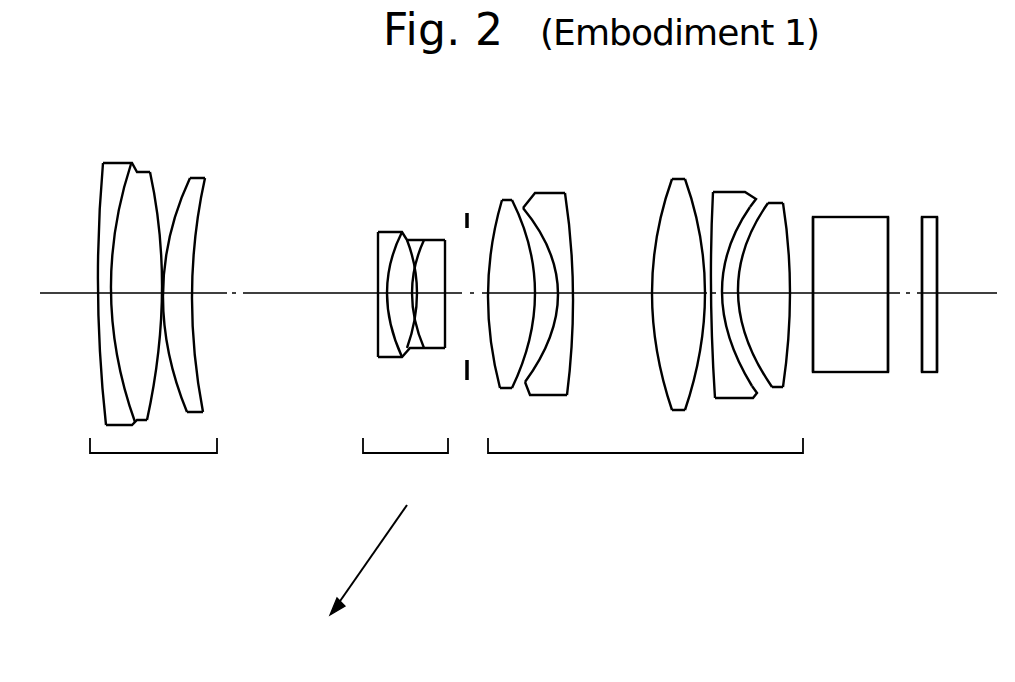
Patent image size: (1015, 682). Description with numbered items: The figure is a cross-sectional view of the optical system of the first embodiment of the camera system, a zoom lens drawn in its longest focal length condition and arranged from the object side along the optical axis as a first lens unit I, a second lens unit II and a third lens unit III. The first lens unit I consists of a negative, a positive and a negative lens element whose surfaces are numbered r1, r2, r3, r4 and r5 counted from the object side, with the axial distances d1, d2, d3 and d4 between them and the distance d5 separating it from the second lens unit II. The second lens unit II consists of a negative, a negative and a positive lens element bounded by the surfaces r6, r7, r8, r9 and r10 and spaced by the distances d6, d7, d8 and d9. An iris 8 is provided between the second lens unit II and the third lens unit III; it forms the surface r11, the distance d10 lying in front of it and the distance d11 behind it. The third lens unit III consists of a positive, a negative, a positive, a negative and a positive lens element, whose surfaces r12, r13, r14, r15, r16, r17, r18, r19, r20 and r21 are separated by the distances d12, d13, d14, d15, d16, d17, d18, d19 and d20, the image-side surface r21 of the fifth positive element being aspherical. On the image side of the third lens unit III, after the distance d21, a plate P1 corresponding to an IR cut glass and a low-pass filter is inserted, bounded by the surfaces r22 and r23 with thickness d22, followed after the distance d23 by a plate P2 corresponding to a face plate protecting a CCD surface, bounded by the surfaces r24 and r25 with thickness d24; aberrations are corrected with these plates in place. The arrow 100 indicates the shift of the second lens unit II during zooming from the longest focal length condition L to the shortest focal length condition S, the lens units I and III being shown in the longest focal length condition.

The first lens surface r1 is at (102, 166).
The second lens surface r2 is at (130, 170).
The third lens surface r3 is at (148, 170).
The fourth lens surface r4 is at (188, 177).
The fifth lens surface r5 is at (207, 177).
The sixth lens surface r6 is at (377, 232).
The seventh lens surface r7 is at (400, 230).
The eighth lens surface r8 is at (408, 240).
The ninth lens surface r9 is at (427, 240).
The tenth lens surface r10 is at (447, 235).
The eleventh surface r11 is at (468, 220).
The twelfth lens surface r12 is at (502, 200).
The thirteenth lens surface r13 is at (512, 200).
The fourteenth lens surface r14 is at (528, 206).
The fifteenth lens surface r15 is at (567, 194).
The sixteenth lens surface r16 is at (672, 180).
The seventeenth lens surface r17 is at (698, 186).
The eighteenth lens surface r18 is at (710, 192).
The nineteenth lens surface r19 is at (747, 192).
The twentieth lens surface r20 is at (768, 203).
The twenty-first lens surface r21 is at (802, 218).
The twenty-second surface r22 is at (806, 222).
The twenty-third surface r23 is at (892, 217).
The twenty-fourth surface r24 is at (922, 220).
The twenty-fifth surface r25 is at (937, 220).
The first axial distance d1 is at (98, 292).
The second axial distance d2 is at (136, 285).
The third axial distance d3 is at (165, 227).
The fourth axial distance d4 is at (175, 290).
The fifth axial distance d5 is at (285, 279).
The sixth axial distance d6 is at (381, 289).
The seventh axial distance d7 is at (397, 286).
The eighth axial distance d8 is at (420, 352).
The ninth axial distance d9 is at (435, 287).
The tenth axial distance d10 is at (462, 303).
The eleventh axial distance d11 is at (485, 300).
The twelfth axial distance d12 is at (513, 285).
The thirteenth axial distance d13 is at (547, 298).
The fourteenth axial distance d14 is at (570, 278).
The fifteenth axial distance d15 is at (576, 290).
The sixteenth axial distance d16 is at (680, 285).
The seventeenth axial distance d17 is at (703, 367).
The eighteenth axial distance d18 is at (727, 340).
The nineteenth axial distance d19 is at (757, 385).
The twentieth axial distance d20 is at (764, 285).
The twenty-first axial distance d21 is at (802, 303).
The twenty-second axial distance d22 is at (850, 282).
The twenty-third axial distance d23 is at (907, 283).
The twenty-fourth axial distance d24 is at (930, 292).
The plate P1 is at (863, 373).
The plate P2 is at (933, 373).
The iris 8 is at (464, 392).
The arrow 100 is at (382, 532).
The first lens unit I is at (153, 469).
The second lens unit II is at (405, 469).
The third lens unit III is at (645, 466).
The longest focal length condition L is at (269, 500).
The shortest focal length condition S is at (268, 602).